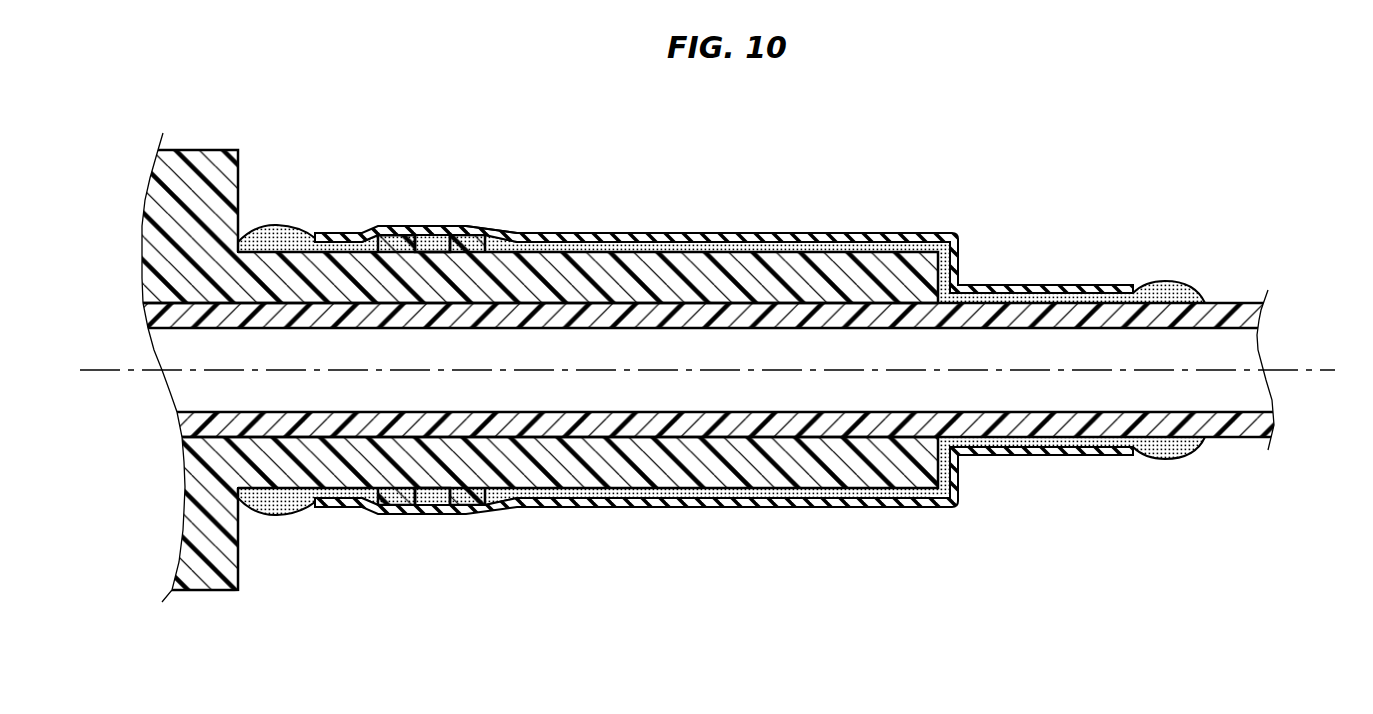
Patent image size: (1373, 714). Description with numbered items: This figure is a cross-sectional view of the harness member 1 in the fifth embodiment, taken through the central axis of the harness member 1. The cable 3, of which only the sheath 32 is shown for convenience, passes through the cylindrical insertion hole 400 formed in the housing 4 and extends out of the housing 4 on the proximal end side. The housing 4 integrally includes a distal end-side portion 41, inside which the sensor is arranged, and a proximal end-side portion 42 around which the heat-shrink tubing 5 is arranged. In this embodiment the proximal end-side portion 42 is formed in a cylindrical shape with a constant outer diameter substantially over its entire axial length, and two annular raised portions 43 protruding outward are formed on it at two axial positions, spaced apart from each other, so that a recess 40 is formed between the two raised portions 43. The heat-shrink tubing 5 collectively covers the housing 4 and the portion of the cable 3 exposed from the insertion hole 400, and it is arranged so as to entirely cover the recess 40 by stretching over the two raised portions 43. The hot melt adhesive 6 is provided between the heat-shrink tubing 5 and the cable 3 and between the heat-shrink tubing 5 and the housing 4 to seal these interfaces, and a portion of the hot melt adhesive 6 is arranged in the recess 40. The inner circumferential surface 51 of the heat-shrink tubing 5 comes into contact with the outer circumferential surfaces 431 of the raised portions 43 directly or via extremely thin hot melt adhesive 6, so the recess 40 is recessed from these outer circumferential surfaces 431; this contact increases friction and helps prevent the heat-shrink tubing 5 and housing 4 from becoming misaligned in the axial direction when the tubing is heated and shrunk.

The harness member 1 is at (1180, 173).
The cable 3 is at (1240, 300).
The sheath 32 is at (1240, 428).
The housing 4 is at (161, 196).
The insertion hole 400 is at (742, 312).
The distal end-side portion 41 is at (196, 165).
The proximal end-side portion 42 is at (693, 268).
The raised portion 43 is at (398, 497).
The outer circumferential surface of raised portion 431 is at (387, 233).
The recess 40 is at (430, 503).
The heat-shrink tubing 5 is at (737, 238).
The inner circumferential surface 51 is at (465, 238).
The hot melt adhesive 6 is at (267, 237).